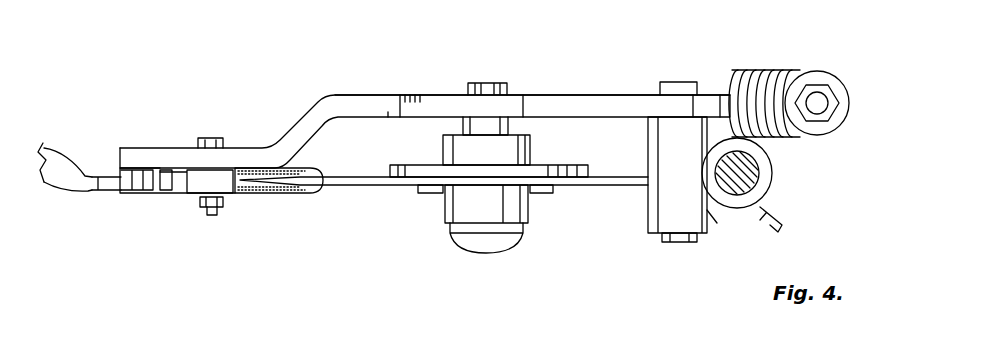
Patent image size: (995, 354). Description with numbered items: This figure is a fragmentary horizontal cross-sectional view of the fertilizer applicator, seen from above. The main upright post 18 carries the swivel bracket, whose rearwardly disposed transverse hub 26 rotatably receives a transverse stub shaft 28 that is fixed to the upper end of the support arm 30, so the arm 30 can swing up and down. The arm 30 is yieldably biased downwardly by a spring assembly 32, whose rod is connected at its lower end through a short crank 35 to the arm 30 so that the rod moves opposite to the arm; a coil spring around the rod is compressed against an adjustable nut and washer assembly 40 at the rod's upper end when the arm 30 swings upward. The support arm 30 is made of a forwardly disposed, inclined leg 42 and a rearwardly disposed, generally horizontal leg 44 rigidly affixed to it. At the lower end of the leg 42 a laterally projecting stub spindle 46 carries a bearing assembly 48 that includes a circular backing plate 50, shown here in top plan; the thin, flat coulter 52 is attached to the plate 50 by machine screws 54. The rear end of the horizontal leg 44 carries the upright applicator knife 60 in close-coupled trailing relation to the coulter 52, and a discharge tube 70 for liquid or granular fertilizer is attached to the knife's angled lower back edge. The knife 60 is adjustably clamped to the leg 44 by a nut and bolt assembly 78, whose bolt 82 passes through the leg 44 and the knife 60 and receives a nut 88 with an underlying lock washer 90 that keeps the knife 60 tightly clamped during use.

The main upright post 18 is at (756, 181).
The transverse hub 26 is at (662, 210).
The transverse stub shaft 28 is at (680, 243).
The support arm 30 is at (607, 88).
The spring assembly 32 is at (797, 63).
The short crank 35 is at (706, 97).
The adjustable nut and washer assembly 40 is at (837, 79).
The inclined leg 42 is at (578, 93).
The horizontal leg 44 is at (271, 158).
The stub spindle 46 is at (493, 82).
The bearing assembly 48 is at (498, 247).
The circular backing plate 50 is at (549, 167).
The coulter 52 is at (386, 196).
The machine screws 54 is at (537, 193).
The applicator knife 60 is at (275, 208).
The discharge tube 70 is at (61, 171).
The nut and bolt assembly 78 is at (208, 130).
The bolt 82 is at (213, 215).
The nut 88 is at (207, 207).
The lock washer 90 is at (197, 195).